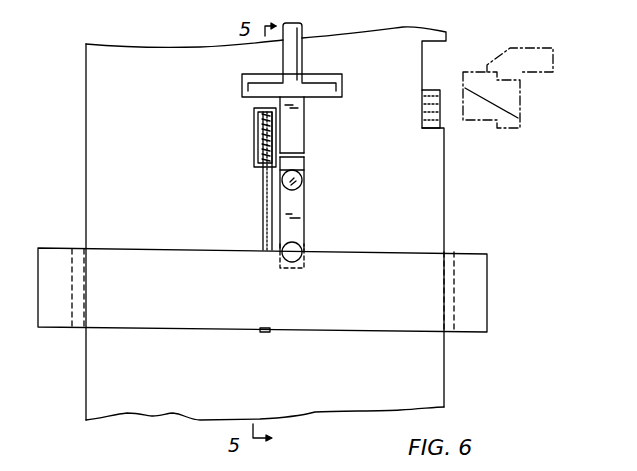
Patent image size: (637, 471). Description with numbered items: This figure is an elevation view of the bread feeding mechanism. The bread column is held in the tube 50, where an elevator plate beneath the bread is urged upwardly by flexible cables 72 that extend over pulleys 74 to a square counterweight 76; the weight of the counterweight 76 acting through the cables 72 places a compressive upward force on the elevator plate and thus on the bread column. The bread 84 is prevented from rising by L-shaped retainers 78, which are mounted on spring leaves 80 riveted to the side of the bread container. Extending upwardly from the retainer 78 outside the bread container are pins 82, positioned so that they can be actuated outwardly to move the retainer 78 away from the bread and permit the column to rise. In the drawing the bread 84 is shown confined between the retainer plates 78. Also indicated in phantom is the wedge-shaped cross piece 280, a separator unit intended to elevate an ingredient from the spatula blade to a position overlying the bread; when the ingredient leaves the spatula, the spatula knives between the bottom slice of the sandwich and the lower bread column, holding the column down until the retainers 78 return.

The tube 50 is at (445, 201).
The flexible cables 72 is at (262, 208).
The pulleys 74 is at (257, 142).
The square counterweight 76 is at (483, 275).
The L-shaped retainers 78 is at (298, 115).
The spring leaves 80 is at (305, 205).
The pins 82 is at (299, 52).
The bread 84 is at (432, 90).
The wedge-shaped cross piece 280 is at (519, 117).